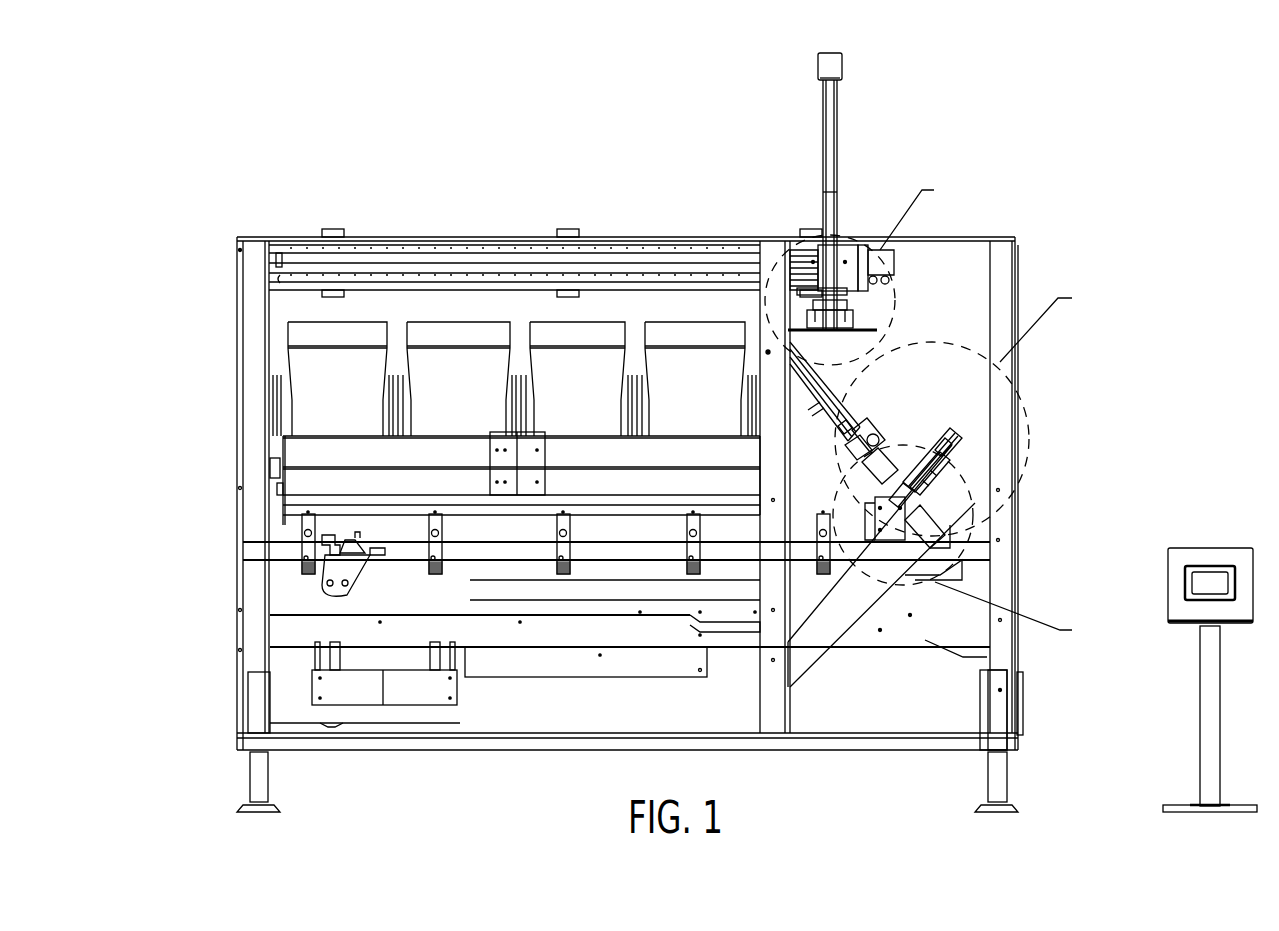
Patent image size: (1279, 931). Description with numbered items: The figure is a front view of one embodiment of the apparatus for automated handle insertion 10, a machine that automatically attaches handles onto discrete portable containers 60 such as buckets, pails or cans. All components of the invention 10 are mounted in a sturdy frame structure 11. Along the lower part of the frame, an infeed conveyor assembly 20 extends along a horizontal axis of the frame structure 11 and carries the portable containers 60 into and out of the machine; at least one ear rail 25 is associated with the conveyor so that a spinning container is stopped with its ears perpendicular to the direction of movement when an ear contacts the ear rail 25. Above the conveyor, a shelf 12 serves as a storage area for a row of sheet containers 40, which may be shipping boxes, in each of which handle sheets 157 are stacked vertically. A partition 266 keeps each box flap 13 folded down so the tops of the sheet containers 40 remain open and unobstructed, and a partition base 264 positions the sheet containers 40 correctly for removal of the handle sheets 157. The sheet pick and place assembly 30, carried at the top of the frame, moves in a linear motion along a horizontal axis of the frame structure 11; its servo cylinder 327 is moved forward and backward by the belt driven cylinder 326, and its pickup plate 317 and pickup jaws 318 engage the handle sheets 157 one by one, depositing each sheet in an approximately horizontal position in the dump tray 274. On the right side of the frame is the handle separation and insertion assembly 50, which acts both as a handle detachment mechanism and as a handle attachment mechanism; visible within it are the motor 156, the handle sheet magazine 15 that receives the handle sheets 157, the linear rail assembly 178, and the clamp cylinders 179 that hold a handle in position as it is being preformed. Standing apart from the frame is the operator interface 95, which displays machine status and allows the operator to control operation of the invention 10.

The apparatus for automated handle insertion 10 is at (610, 225).
The frame structure 11 is at (258, 345).
The shelf 12 is at (372, 437).
The box flap 13 is at (405, 372).
The handle sheet magazine 15 is at (978, 352).
The infeed conveyor assembly 20 is at (285, 595).
The ear rail 25 is at (320, 512).
The sheet pick and place assembly 30 is at (825, 105).
The sheet container 40 is at (458, 330).
The handle separation and insertion assembly 50 is at (935, 512).
The portable container 60 is at (920, 557).
The operator interface 95 is at (1197, 577).
The motor 156 is at (990, 468).
The handle sheet 157 is at (822, 378).
The linear rail assembly 178 is at (958, 483).
The clamp cylinder 179 is at (985, 432).
The partition base 264 is at (275, 455).
The partition 266 is at (400, 395).
The dump tray 274 is at (866, 430).
The pickup plate 317 is at (885, 283).
The pickup jaws 318 is at (868, 310).
The belt driven cylinder 326 is at (643, 257).
The servo cylinder 327 is at (823, 158).